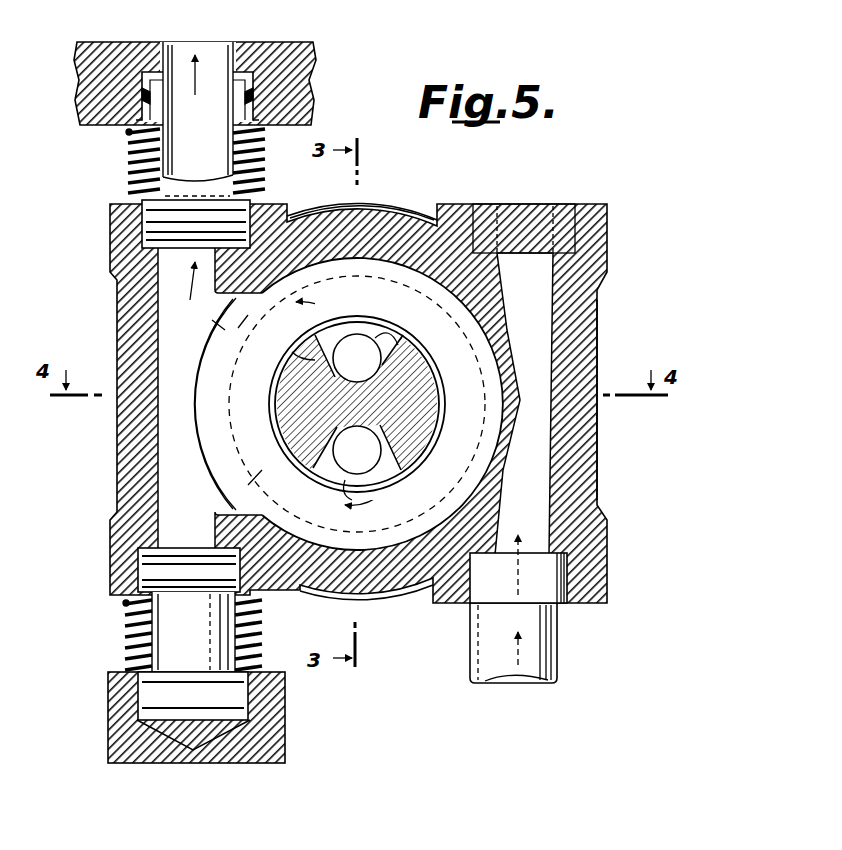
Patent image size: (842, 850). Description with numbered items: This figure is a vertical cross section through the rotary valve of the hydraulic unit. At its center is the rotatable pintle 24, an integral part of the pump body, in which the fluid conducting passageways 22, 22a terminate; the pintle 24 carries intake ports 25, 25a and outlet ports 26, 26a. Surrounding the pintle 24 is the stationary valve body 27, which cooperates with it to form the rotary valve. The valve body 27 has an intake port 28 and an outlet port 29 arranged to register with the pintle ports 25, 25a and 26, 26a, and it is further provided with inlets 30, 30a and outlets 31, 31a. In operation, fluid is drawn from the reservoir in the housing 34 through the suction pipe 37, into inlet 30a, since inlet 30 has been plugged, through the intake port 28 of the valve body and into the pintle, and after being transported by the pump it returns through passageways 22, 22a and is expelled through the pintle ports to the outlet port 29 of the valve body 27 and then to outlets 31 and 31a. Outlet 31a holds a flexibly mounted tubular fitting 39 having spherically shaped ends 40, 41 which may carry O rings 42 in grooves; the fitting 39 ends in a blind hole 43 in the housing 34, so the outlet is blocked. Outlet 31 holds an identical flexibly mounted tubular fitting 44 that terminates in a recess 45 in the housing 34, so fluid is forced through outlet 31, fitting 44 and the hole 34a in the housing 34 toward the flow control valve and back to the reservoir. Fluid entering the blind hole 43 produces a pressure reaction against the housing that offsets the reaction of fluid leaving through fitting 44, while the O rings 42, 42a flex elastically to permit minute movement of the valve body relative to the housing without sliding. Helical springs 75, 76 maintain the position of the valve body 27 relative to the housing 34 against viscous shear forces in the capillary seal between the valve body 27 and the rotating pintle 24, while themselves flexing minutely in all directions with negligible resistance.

The fluid conducting passageway 22 is at (357, 358).
The fluid conducting passageway 22a is at (357, 450).
The pintle 24 is at (418, 466).
The intake port 25 is at (432, 368).
The intake port 25a is at (290, 360).
The outlet port 26 is at (385, 330).
The outlet port 26a is at (375, 485).
The valve body 27 is at (350, 215).
The intake port 28 is at (545, 372).
The outlet port 29 is at (203, 404).
The inlet 30 is at (525, 208).
The inlet 30a is at (570, 578).
The outlet 31 is at (145, 232).
The outlet 31a is at (138, 560).
The housing 34 is at (80, 57).
The hole 34a is at (218, 29).
The suction pipe 37 is at (560, 645).
The tubular fitting 39 is at (125, 637).
The spherically shaped end 40 is at (146, 582).
The spherically shaped end 41 is at (138, 686).
The O ring 42 is at (146, 566).
The O ring 42a is at (256, 100).
The blind hole 43 is at (180, 735).
The tubular fitting 44 is at (128, 163).
The recess 45 is at (158, 62).
The helical spring 75 is at (124, 604).
The helical spring 76 is at (126, 132).